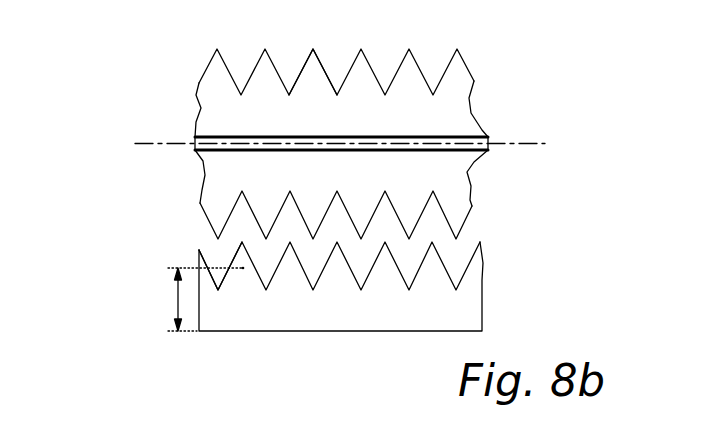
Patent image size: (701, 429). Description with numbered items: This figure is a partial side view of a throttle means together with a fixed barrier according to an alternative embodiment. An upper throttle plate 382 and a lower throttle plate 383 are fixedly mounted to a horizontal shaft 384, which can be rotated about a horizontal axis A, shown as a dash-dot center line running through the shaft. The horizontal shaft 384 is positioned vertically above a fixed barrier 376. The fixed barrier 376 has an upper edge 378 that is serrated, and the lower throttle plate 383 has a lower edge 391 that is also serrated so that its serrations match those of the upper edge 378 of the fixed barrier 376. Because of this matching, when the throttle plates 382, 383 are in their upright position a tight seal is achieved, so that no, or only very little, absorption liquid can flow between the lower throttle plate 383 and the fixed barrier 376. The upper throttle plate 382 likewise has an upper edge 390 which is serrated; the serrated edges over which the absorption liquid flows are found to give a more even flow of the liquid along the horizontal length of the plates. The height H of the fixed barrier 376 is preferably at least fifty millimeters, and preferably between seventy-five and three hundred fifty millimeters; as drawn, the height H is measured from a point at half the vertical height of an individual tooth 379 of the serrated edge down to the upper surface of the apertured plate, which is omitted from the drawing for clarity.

The horizontal axis A is at (143, 144).
The upper throttle plate 382 is at (315, 60).
The upper edge 390 is at (341, 68).
The horizontal shaft 384 is at (437, 136).
The lower throttle plate 383 is at (342, 201).
The lower edge 391 is at (250, 213).
The fixed barrier 376 is at (312, 286).
The upper edge 378 is at (443, 258).
The tooth 379 is at (240, 252).
The height H is at (197, 299).